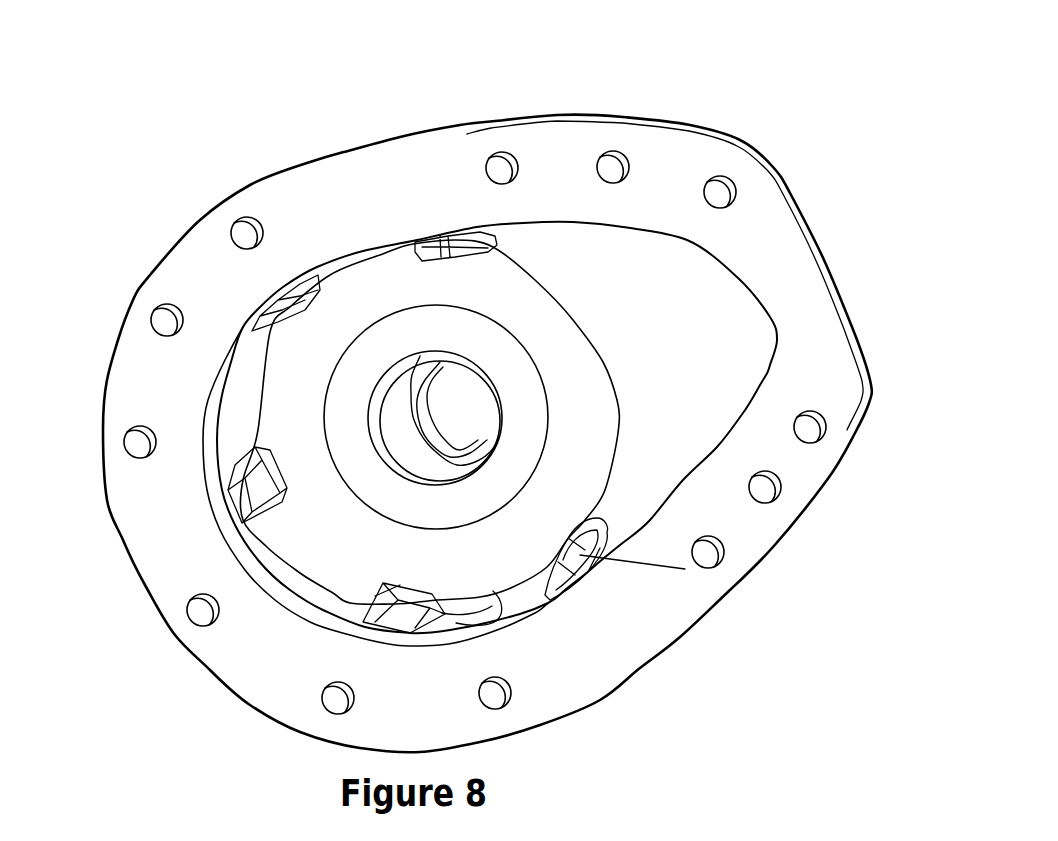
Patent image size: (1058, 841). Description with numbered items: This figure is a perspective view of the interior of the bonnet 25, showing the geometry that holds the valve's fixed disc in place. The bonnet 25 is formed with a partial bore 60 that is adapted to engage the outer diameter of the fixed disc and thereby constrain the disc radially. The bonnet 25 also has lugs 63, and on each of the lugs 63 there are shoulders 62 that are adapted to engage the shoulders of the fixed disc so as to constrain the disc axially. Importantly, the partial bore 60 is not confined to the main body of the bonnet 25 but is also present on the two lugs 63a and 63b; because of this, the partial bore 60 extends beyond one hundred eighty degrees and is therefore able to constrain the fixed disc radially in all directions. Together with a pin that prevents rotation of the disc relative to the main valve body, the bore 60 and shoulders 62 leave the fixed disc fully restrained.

The bonnet 25 is at (787, 182).
The partial bore 60 is at (257, 562).
The shoulders 62 is at (373, 625).
The lugs 63 is at (420, 620).
The lug 63a is at (583, 557).
The lug 63b is at (478, 232).